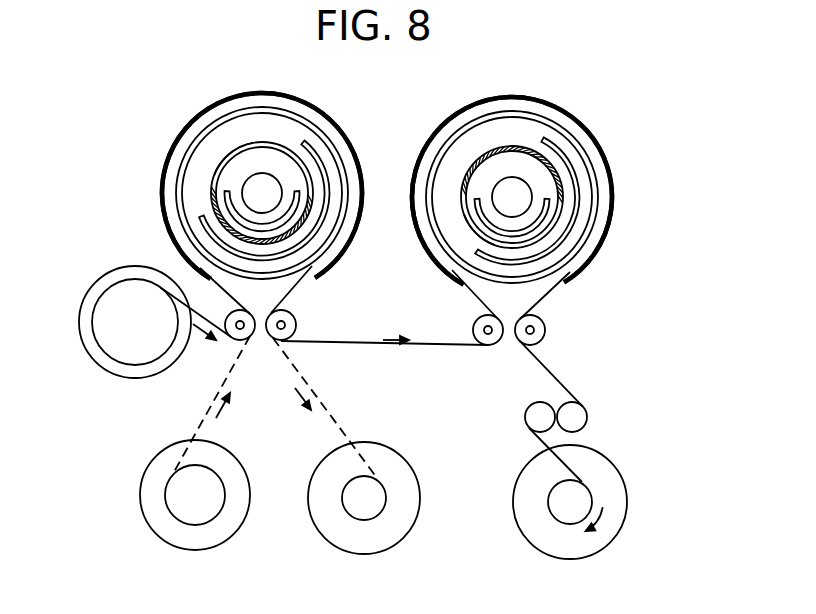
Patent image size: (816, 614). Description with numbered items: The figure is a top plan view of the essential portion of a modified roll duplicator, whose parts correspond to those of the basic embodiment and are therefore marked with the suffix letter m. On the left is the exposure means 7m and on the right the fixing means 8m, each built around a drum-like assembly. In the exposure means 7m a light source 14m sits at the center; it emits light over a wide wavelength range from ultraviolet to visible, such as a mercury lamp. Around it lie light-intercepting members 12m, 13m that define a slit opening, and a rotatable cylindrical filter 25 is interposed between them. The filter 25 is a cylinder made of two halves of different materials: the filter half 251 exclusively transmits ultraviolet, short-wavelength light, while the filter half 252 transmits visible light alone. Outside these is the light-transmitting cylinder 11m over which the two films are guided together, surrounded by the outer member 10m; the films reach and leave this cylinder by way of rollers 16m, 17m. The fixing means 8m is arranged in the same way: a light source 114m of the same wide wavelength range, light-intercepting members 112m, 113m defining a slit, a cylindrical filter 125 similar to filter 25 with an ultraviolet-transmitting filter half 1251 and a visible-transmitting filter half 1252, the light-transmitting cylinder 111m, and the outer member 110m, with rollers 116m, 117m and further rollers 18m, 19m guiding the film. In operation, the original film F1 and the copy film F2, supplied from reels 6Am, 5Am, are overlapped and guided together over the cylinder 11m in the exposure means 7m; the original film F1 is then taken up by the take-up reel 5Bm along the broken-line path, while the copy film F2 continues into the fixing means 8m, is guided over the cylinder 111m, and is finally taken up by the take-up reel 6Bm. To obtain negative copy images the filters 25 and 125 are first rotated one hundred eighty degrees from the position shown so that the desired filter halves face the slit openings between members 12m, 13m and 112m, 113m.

The exposure means 7m is at (247, 56).
The fixing means 8m is at (602, 74).
The outer guide drum 10m is at (345, 257).
The light-transmitting cylinder 11m is at (294, 118).
The light-intercepting member 12m is at (323, 168).
The light-intercepting member 13m is at (225, 205).
The light source 14m is at (260, 178).
The cylindrical filter 25 is at (312, 212).
The filter half 251 is at (261, 256).
The filter half 252 is at (218, 160).
The outer guide drum 110m is at (593, 260).
The light-transmitting cylinder 111m is at (592, 223).
The light-intercepting member 112m is at (578, 190).
The light-intercepting member 113m is at (477, 215).
The light source 114m is at (509, 185).
The cylindrical filter 125 is at (560, 170).
The filter half 1251 is at (472, 160).
The filter half 1252 is at (472, 240).
The guide roller 16m is at (236, 336).
The guide roller 17m is at (294, 320).
The guide roller 116m is at (478, 317).
The guide roller 117m is at (541, 320).
The guide roller 18m is at (528, 407).
The guide roller 19m is at (585, 407).
The tape reel 6Am is at (131, 366).
The tape reel 5Am is at (147, 500).
The take-up reel 5Bm is at (420, 508).
The take-up reel 6Bm is at (609, 519).